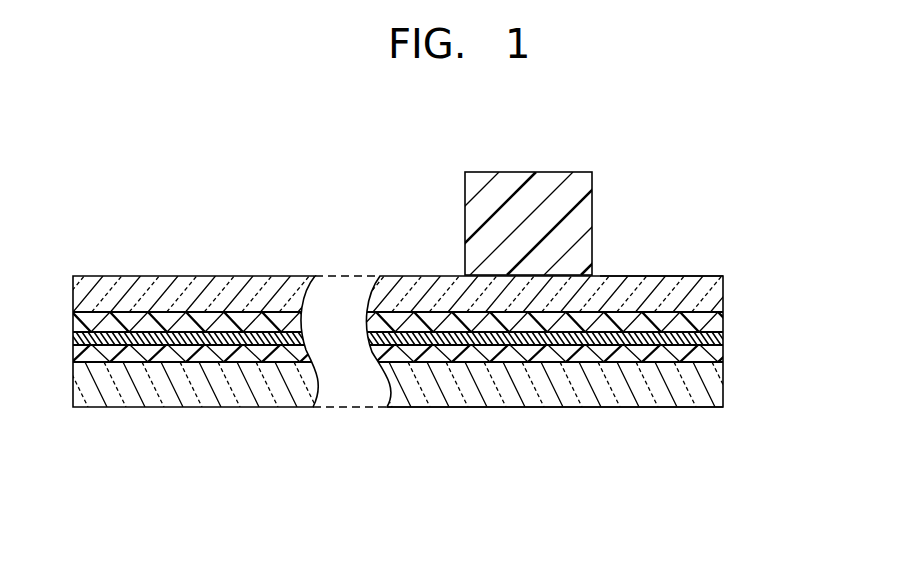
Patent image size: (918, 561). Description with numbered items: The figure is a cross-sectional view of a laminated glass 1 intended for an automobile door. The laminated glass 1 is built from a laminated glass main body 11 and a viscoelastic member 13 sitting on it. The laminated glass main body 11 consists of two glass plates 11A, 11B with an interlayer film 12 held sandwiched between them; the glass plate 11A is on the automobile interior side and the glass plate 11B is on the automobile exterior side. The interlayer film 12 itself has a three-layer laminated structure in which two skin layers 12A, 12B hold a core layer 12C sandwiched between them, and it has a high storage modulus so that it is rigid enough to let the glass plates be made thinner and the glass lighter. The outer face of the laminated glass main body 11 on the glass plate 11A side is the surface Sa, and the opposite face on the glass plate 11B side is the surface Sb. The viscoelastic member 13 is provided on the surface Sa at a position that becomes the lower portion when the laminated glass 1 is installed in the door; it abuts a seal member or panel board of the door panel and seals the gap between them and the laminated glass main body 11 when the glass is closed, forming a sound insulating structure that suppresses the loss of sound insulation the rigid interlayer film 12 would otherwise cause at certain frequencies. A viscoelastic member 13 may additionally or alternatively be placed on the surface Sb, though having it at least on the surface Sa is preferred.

The laminated glass 1 is at (265, 187).
The laminated glass main body 11 is at (398, 302).
The glass plate 11A is at (712, 281).
The glass plate 11B is at (713, 386).
The interlayer film 12 is at (449, 337).
The skin layer 12A is at (715, 316).
The skin layer 12B is at (710, 351).
The core layer 12C is at (717, 338).
The viscoelastic member 13 is at (580, 173).
The surface Sa is at (643, 276).
The surface Sb is at (560, 408).